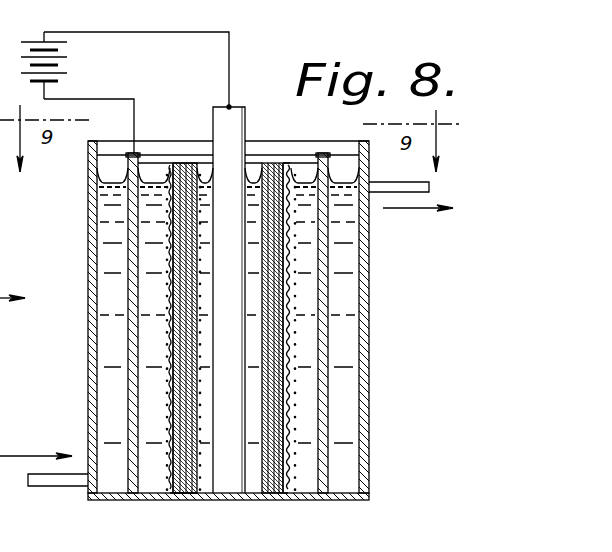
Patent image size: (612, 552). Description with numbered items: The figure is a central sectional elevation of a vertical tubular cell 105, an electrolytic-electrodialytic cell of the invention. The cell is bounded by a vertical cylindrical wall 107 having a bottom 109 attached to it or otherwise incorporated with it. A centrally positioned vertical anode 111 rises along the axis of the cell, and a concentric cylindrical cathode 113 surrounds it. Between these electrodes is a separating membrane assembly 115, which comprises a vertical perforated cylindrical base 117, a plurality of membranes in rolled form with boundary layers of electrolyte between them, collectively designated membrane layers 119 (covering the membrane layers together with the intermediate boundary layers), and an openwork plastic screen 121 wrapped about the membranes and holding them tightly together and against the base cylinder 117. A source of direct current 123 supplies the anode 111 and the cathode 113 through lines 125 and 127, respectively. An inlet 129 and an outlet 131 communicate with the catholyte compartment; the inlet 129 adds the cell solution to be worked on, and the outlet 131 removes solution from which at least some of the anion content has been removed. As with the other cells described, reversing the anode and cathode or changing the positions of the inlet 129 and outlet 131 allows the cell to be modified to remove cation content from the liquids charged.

The vertical tubular cell 105 is at (379, 417).
The vertical cylindrical wall 107 is at (368, 291).
The bottom 109 is at (346, 501).
The vertical anode 111 is at (233, 118).
The concentric cylindrical cathode 113 is at (130, 230).
The separating membrane assembly 115 is at (296, 334).
The vertical perforated cylindrical base 117 is at (170, 253).
The membrane layers 119 is at (170, 352).
The openwork plastic screen 121 is at (174, 395).
The source of direct current 123 is at (70, 50).
The line 125 is at (229, 53).
The line 127 is at (120, 97).
The inlet 129 is at (43, 484).
The outlet 131 is at (381, 192).